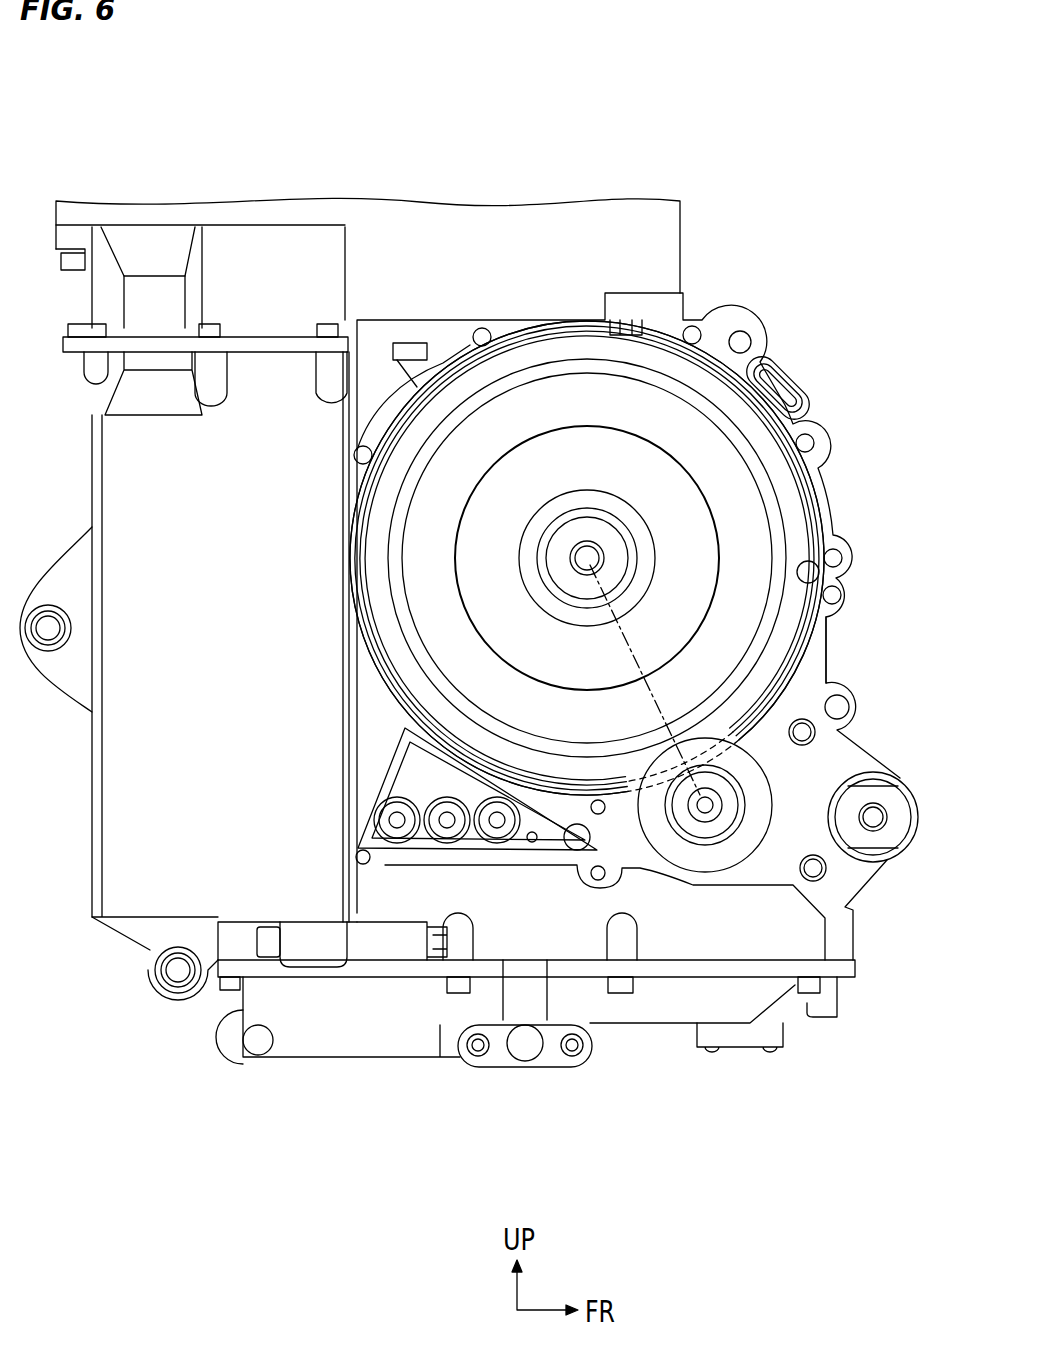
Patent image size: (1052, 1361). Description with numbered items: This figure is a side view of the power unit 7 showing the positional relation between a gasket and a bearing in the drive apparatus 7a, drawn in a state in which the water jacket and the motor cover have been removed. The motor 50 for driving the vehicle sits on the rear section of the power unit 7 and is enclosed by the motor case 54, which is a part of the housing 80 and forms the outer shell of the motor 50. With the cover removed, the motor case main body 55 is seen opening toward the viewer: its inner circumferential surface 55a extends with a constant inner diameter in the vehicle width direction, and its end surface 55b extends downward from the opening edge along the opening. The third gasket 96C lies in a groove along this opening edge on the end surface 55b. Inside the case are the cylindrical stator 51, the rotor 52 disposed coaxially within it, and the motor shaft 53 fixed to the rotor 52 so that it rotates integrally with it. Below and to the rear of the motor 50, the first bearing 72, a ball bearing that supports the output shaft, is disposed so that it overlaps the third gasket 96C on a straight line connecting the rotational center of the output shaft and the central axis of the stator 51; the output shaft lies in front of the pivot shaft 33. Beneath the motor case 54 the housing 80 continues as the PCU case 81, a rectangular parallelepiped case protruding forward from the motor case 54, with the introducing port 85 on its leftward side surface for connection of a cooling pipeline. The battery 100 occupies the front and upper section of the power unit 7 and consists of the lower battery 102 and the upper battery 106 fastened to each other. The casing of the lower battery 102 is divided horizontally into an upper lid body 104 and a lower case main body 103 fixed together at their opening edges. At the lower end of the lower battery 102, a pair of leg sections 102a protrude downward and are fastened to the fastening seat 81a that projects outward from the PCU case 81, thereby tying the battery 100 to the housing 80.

The power unit 7 is at (101, 144).
The battery 100 is at (223, 197).
The upper battery 106 is at (513, 243).
The lid body 104 is at (112, 298).
The lower battery 102 is at (92, 463).
The case main body 103 is at (123, 500).
The leg section 102a is at (313, 942).
The fastening seat 81a is at (388, 950).
The housing 80 is at (337, 1058).
The drive apparatus 7a is at (536, 1008).
The PCU case 81 is at (618, 1013).
The introducing port 85 is at (530, 1060).
The motor 50 is at (813, 473).
The motor case main body 55 is at (825, 527).
The motor case 54 is at (635, 558).
The inner circumferential surface 55a is at (812, 582).
The third gasket 96C is at (803, 655).
The end surface 55b is at (802, 780).
The pivot shaft 33 is at (873, 840).
The first bearing 72 is at (700, 858).
The stator 51 is at (680, 372).
The rotor 52 is at (655, 482).
The motor shaft 53 is at (632, 558).